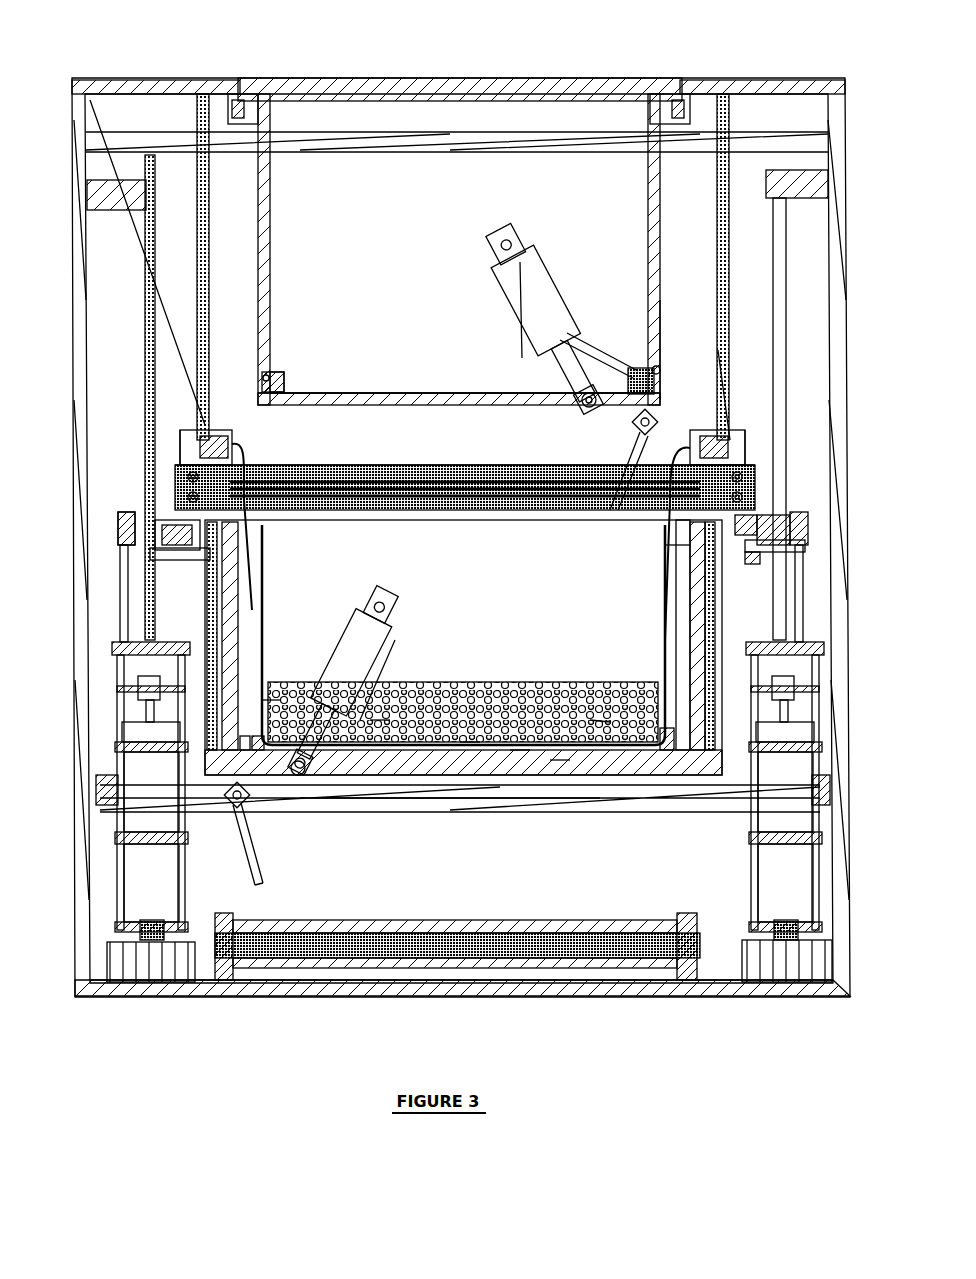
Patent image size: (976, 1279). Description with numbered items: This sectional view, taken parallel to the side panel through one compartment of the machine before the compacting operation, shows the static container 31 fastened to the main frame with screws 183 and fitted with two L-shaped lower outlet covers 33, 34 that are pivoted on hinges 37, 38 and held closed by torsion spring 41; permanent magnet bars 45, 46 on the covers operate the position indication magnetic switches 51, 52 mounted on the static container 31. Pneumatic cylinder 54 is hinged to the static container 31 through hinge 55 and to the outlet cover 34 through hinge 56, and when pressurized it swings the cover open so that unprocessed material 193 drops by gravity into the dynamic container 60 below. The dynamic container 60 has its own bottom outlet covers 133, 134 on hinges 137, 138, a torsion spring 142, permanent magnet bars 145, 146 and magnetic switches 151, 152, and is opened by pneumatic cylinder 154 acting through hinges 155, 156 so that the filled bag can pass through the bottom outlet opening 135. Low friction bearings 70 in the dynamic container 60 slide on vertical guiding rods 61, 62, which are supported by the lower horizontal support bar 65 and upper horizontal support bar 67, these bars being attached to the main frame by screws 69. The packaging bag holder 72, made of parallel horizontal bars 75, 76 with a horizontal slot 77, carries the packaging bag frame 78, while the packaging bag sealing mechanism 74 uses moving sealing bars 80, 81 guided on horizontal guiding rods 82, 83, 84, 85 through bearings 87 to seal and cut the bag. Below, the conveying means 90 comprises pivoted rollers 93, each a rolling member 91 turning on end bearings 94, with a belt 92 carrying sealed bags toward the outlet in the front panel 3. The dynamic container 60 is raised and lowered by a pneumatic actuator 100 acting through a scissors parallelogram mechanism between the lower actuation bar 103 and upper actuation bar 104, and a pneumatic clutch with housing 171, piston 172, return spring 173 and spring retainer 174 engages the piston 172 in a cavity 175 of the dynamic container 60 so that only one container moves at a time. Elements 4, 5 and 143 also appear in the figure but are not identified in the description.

The front panel 3 is at (800, 180).
The frame 4 is at (240, 84).
The cover 5 is at (355, 82).
The static container 31 is at (290, 95).
The lower outlet cover 33 is at (440, 395).
The lower outlet cover 34 is at (490, 400).
The hinge 37 is at (300, 395).
The hinge 38 is at (640, 380).
The torsion spring 41 is at (270, 372).
The permanent magnet bar 45 is at (280, 372).
The permanent magnet bar 46 is at (630, 372).
The position indication magnetic switch 51 is at (262, 372).
The position indication magnetic switch 52 is at (690, 345).
The pneumatic cylinder 54 is at (535, 230).
The hinge 55 is at (503, 232).
The hinge 56 is at (585, 408).
The dynamic container 60 is at (200, 570).
The vertical guiding rod 61 is at (200, 425).
The vertical guiding rod 62 is at (730, 390).
The lower horizontal support bar 65 is at (578, 788).
The upper horizontal support bar 67 is at (395, 150).
The screws 69 is at (725, 140).
The low friction bearings 70 is at (690, 523).
The packaging bag holder 72 is at (185, 475).
The packaging bag sealing mechanism 74 is at (340, 468).
The horizontal bar 75 is at (255, 470).
The horizontal bar 76 is at (745, 462).
The horizontal slot 77 is at (745, 440).
The packaging bag frame 78 is at (190, 445).
The moving sealing bar 80 is at (405, 468).
The moving sealing bar 81 is at (500, 515).
The horizontal guiding rod 82 is at (188, 477).
The horizontal guiding rod 83 is at (188, 497).
The horizontal guiding rod 84 is at (742, 477).
The horizontal guiding rod 85 is at (742, 497).
The low friction bearings 87 is at (185, 500).
The conveying means 90 is at (295, 965).
The rolling member 91 is at (548, 800).
The belt 92 is at (385, 958).
The pivoted rollers 93 is at (470, 948).
The end bearings 94 is at (205, 990).
The pneumatic actuator 100 is at (113, 780).
The lower actuation bar 103 is at (125, 990).
The upper actuation bar 104 is at (120, 530).
The bottom outlet cover 133 is at (440, 715).
The bottom outlet cover 134 is at (470, 740).
The bottom outlet opening 135 is at (520, 750).
The hinge 137 is at (270, 700).
The hinge 138 is at (560, 760).
The torsion spring 142 is at (600, 720).
The pivot 143 is at (300, 755).
The permanent magnet bar 145 is at (262, 745).
The permanent magnet bar 146 is at (700, 725).
The position indication magnetic switch 151 is at (245, 740).
The position indication magnetic switch 152 is at (690, 700).
The pneumatic cylinder 154 is at (410, 600).
The hinge 155 is at (390, 640).
The hinge 156 is at (380, 720).
The housing 171 is at (760, 525).
The piston 172 is at (770, 540).
The return spring 173 is at (790, 548).
The spring retainer 174 is at (795, 560).
The cavity 175 is at (680, 545).
The screws 183 is at (245, 100).
The unprocessed material 193 is at (660, 745).